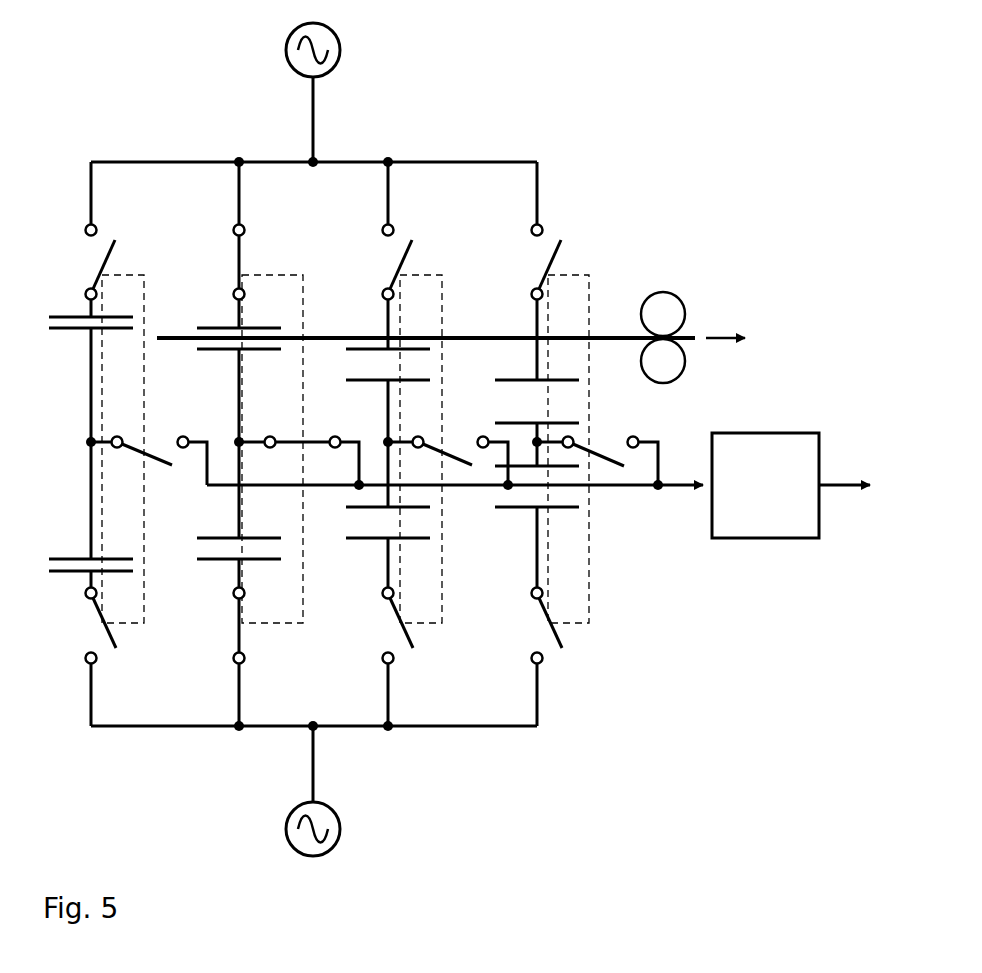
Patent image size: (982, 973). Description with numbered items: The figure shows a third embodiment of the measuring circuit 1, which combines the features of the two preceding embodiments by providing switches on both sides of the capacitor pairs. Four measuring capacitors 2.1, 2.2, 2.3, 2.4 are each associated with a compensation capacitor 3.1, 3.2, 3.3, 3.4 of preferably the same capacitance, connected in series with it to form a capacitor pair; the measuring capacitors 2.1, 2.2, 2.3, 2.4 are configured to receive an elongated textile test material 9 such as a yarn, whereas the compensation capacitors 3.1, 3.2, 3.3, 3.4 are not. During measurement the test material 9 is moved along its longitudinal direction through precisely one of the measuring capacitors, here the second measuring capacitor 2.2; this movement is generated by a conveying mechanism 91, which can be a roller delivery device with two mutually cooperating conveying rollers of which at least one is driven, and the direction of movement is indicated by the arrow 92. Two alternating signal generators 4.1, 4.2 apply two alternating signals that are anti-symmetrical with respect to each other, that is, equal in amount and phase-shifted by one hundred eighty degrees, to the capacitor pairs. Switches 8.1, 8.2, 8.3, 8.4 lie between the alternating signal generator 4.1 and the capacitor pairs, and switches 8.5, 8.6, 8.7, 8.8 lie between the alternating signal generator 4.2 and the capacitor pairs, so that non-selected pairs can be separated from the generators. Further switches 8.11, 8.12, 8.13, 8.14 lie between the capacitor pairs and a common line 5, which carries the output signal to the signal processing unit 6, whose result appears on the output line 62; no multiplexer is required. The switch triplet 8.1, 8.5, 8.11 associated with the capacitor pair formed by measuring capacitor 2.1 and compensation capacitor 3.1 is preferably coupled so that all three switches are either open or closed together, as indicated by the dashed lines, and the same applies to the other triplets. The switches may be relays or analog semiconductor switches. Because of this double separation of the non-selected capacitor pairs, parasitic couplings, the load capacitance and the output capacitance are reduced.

The measuring circuit 1 is at (86, 60).
The measuring capacitor 2.1 is at (103, 329).
The measuring capacitor 2.2 is at (258, 351).
The measuring capacitor 2.3 is at (397, 382).
The measuring capacitor 2.4 is at (567, 379).
The compensation capacitor 3.1 is at (105, 557).
The compensation capacitor 3.2 is at (258, 536).
The compensation capacitor 3.3 is at (397, 540).
The compensation capacitor 3.4 is at (545, 509).
The alternating signal generator 4.1 is at (342, 48).
The alternating signal generator 4.2 is at (342, 829).
The line for output signals 5 is at (680, 488).
The signal processing unit 6 is at (767, 432).
The output line 62 is at (847, 488).
The switch 8.1 is at (100, 267).
The switch 8.2 is at (239, 267).
The switch 8.3 is at (400, 267).
The switch 8.4 is at (547, 267).
The switch 8.5 is at (94, 612).
The switch 8.6 is at (237, 612).
The switch 8.7 is at (389, 612).
The switch 8.8 is at (540, 612).
The switch 8.11 is at (153, 452).
The switch 8.12 is at (317, 443).
The switch 8.13 is at (447, 448).
The switch 8.14 is at (600, 445).
The test material 9 is at (172, 341).
The conveying mechanism 91 is at (665, 277).
The direction of movement of the test material 92 is at (726, 337).